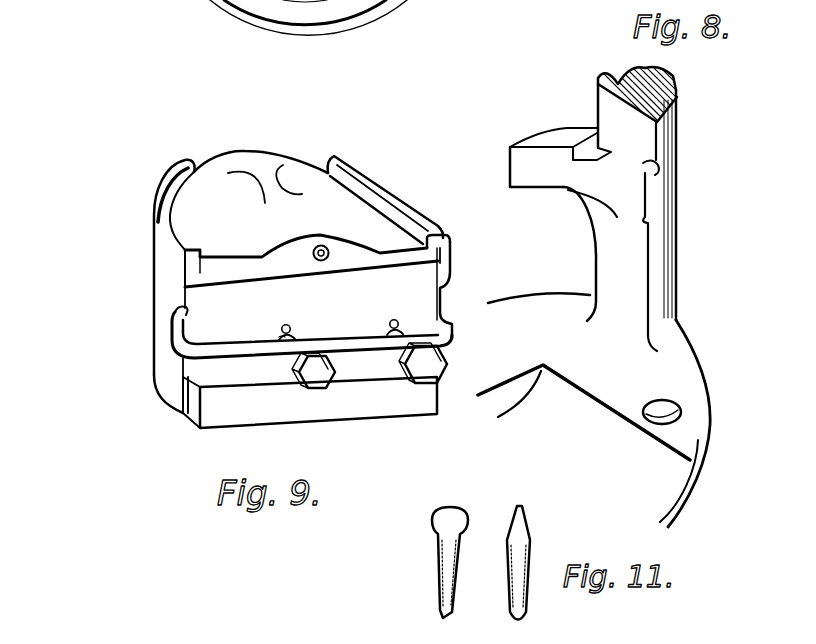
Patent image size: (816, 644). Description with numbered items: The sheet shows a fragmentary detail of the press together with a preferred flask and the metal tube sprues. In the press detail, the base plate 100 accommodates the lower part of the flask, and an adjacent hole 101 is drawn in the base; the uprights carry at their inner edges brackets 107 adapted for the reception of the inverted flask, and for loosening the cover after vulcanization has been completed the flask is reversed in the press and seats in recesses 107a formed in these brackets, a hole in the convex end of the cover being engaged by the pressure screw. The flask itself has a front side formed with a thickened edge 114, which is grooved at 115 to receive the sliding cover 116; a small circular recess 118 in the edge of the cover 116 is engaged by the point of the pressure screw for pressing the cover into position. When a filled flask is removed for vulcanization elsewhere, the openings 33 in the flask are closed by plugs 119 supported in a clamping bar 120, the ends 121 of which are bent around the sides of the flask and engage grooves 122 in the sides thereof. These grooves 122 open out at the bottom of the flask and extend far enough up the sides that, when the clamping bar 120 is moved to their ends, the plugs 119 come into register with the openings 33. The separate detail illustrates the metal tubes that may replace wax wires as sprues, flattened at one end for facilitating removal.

In FIG. 9, the openings 33 is at (279, 337).
In FIG. 8, the base plate 100 is at (584, 376).
In FIG. 8, the hole 101 is at (663, 407).
In FIG. 8, the brackets 107 is at (523, 168).
In FIG. 8, the recesses 107a is at (582, 152).
In FIG. 9, the thickened edge 114 is at (446, 254).
In FIG. 9, the groove 115 is at (436, 247).
In FIG. 9, the sliding cover 116 is at (290, 180).
In FIG. 9, the circular recess 118 is at (327, 259).
In FIG. 9, the plugs 119 is at (285, 325).
In FIG. 9, the clamping bar 120 is at (337, 375).
In FIG. 9, the ends 121 is at (187, 357).
In FIG. 9, the grooves 122 is at (181, 410).